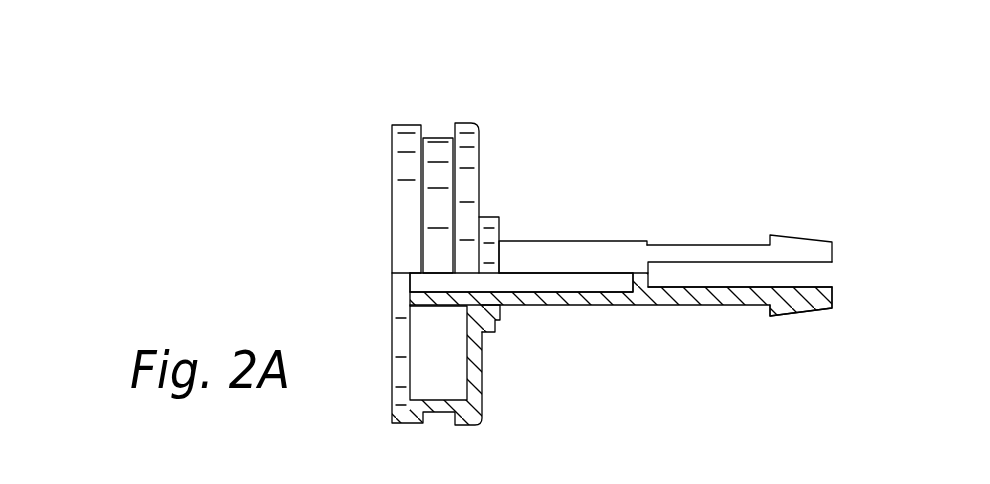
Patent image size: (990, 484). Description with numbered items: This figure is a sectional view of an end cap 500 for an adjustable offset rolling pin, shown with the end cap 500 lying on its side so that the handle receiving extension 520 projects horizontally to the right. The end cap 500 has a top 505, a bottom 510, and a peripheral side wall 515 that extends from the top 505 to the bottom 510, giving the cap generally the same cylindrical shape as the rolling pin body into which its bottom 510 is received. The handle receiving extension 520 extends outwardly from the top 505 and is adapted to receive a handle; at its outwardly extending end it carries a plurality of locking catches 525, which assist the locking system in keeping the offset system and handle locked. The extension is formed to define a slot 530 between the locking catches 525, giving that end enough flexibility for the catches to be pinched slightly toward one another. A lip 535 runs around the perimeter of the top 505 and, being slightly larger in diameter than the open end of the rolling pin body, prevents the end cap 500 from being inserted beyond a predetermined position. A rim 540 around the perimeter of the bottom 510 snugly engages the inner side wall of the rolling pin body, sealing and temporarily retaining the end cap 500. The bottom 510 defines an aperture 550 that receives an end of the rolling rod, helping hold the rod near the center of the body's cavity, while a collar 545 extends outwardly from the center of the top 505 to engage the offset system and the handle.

The end cap 500 is at (490, 135).
The top 505 is at (480, 177).
The bottom 510 is at (392, 210).
The peripheral side wall 515 is at (436, 137).
The handle receiving extension 520 is at (593, 241).
The locking catches 525 is at (774, 236).
The slot 530 is at (826, 274).
The lip 535 is at (463, 122).
The rim 540 is at (407, 125).
The collar 545 is at (492, 333).
The aperture 550 is at (382, 279).